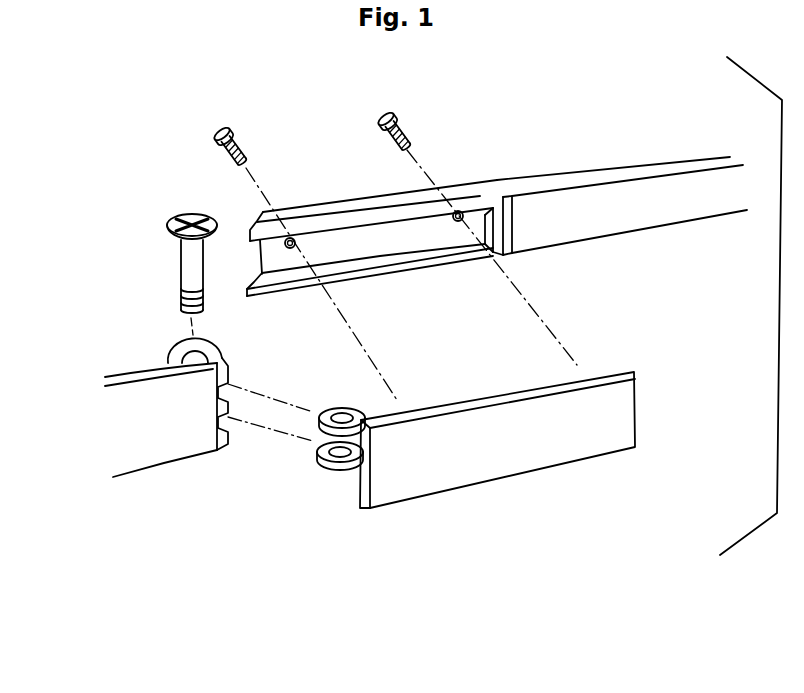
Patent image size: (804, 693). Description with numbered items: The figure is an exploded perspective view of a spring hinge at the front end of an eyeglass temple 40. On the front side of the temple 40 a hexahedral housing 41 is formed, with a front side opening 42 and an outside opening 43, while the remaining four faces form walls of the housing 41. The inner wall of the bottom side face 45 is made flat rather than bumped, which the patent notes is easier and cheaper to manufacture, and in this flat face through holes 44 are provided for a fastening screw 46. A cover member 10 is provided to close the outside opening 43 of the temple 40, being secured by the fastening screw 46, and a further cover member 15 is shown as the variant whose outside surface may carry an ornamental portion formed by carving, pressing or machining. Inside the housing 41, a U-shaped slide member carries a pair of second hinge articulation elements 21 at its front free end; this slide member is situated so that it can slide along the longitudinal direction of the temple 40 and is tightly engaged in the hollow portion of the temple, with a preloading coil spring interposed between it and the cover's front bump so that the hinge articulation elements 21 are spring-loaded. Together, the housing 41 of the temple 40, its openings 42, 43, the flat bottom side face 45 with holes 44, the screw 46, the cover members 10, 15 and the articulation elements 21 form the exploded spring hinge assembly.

The cover member 10 is at (643, 422).
The cover member 15 is at (537, 447).
The second hinge articulation element 21 is at (320, 431).
The temple 40 is at (557, 177).
The channel portion of rail 41 is at (340, 203).
The front side opening 42 is at (257, 258).
The outside opening 43 is at (415, 237).
The through holes 44 is at (288, 240).
The bottom side face 45 is at (357, 242).
The fastening screw 46 is at (217, 130).